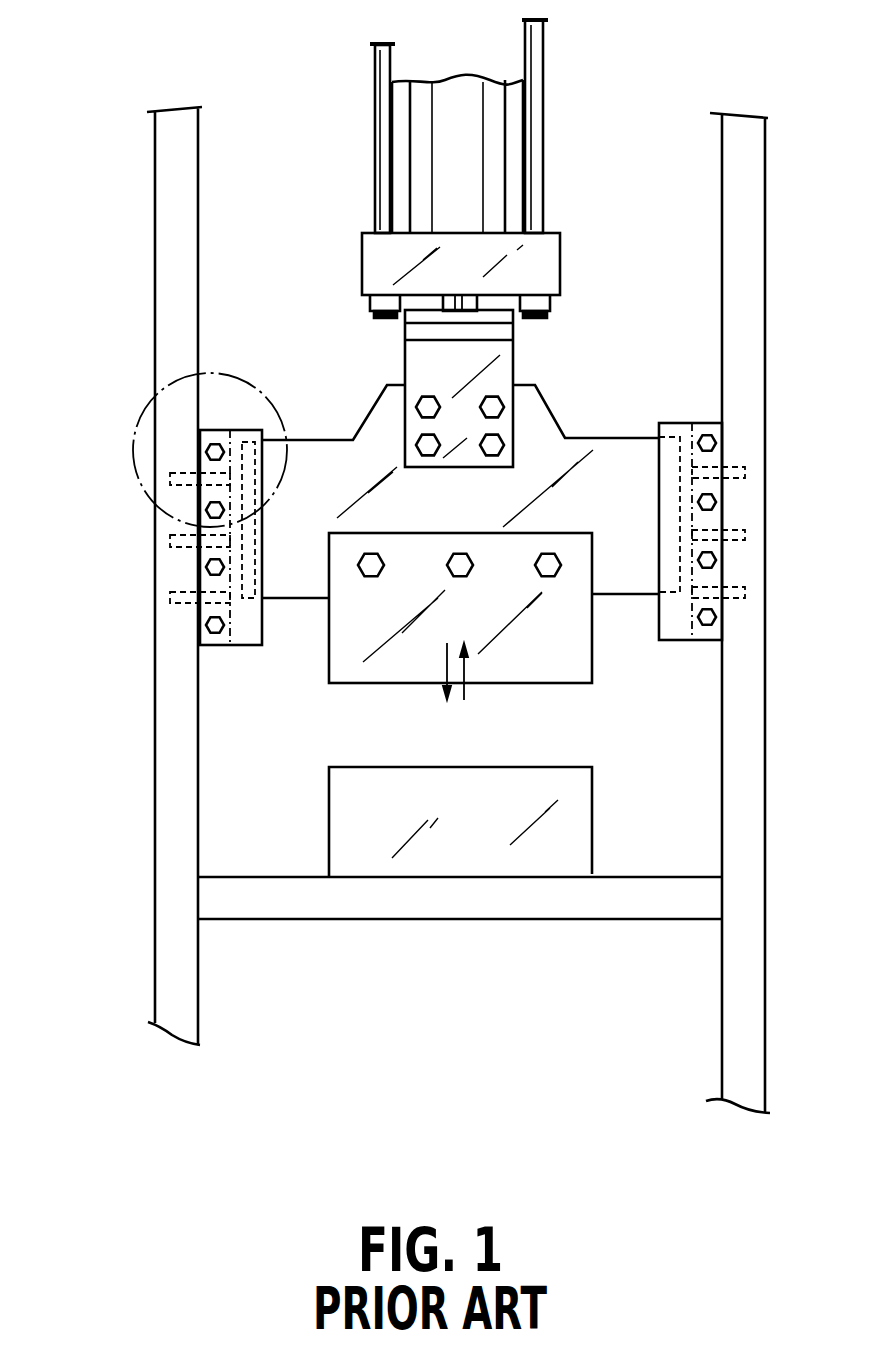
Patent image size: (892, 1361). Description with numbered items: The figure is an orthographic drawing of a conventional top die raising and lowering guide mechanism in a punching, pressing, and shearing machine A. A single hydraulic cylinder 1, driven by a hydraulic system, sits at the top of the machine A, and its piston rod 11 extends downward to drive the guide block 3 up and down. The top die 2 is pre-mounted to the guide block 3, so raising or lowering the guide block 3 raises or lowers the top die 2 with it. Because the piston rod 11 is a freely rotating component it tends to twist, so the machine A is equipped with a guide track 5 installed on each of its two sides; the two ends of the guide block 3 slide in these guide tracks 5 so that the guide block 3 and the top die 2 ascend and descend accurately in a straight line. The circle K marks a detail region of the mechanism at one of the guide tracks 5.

The hydraulic cylinder 1 is at (422, 147).
The piston rod 11 is at (452, 297).
The guide block 3 is at (293, 502).
The top die 2 is at (377, 647).
The guide track 5 is at (250, 620).
The machine A is at (173, 255).
The detail circle K is at (152, 405).